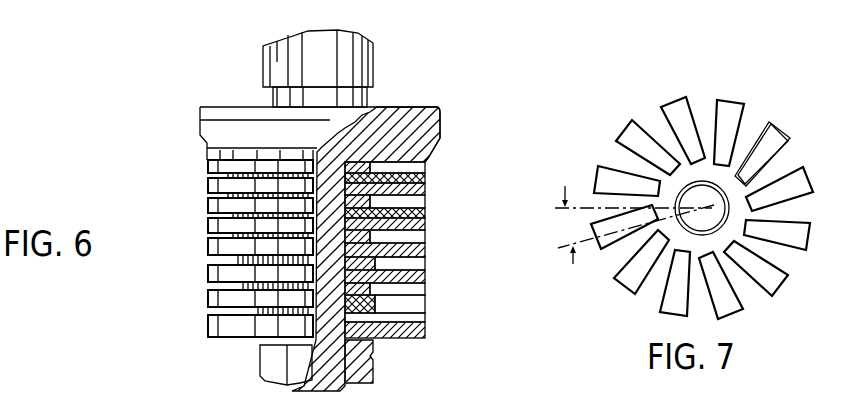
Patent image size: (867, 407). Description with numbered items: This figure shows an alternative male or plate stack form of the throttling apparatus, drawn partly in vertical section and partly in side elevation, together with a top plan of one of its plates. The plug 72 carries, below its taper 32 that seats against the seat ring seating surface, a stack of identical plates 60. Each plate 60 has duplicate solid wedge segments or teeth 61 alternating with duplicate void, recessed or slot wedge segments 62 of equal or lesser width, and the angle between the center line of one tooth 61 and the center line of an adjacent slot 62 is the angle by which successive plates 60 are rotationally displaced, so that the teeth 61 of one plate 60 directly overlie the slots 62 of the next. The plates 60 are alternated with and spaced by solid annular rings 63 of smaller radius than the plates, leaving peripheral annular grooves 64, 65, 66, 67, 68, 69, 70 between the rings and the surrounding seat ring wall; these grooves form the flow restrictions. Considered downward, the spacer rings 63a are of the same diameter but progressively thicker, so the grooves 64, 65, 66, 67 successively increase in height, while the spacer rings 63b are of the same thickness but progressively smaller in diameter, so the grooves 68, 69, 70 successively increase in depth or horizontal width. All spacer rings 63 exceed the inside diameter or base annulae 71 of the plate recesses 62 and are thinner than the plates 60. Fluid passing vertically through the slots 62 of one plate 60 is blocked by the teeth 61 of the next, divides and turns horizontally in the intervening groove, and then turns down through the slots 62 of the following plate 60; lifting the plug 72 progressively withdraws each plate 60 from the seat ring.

In FIG. 6, the plug 72 is at (182, 132).
In FIG. 6, the taper 32 is at (433, 143).
In FIG. 6, the annular groove 64 is at (214, 175).
In FIG. 6, the annular groove 65 is at (209, 195).
In FIG. 6, the annular groove 66 is at (209, 216).
In FIG. 6, the annular groove 67 is at (211, 238).
In FIG. 6, the annular groove 68 is at (214, 263).
In FIG. 6, the annular groove 69 is at (214, 292).
In FIG. 6, the annular groove 70 is at (214, 317).
In FIG. 6, the spacer rings 63a is at (426, 238).
In FIG. 6, the solid annular rings 63 is at (439, 254).
In FIG. 6, the spacer rings 63b is at (427, 325).
In FIG. 7, the plate 60 is at (690, 192).
In FIG. 7, the solid wedge segments or teeth 61 is at (731, 95).
In FIG. 7, the void wedge segments or slots 62 is at (782, 162).
In FIG. 7, the inside diameter or base annulae 71 is at (652, 179).